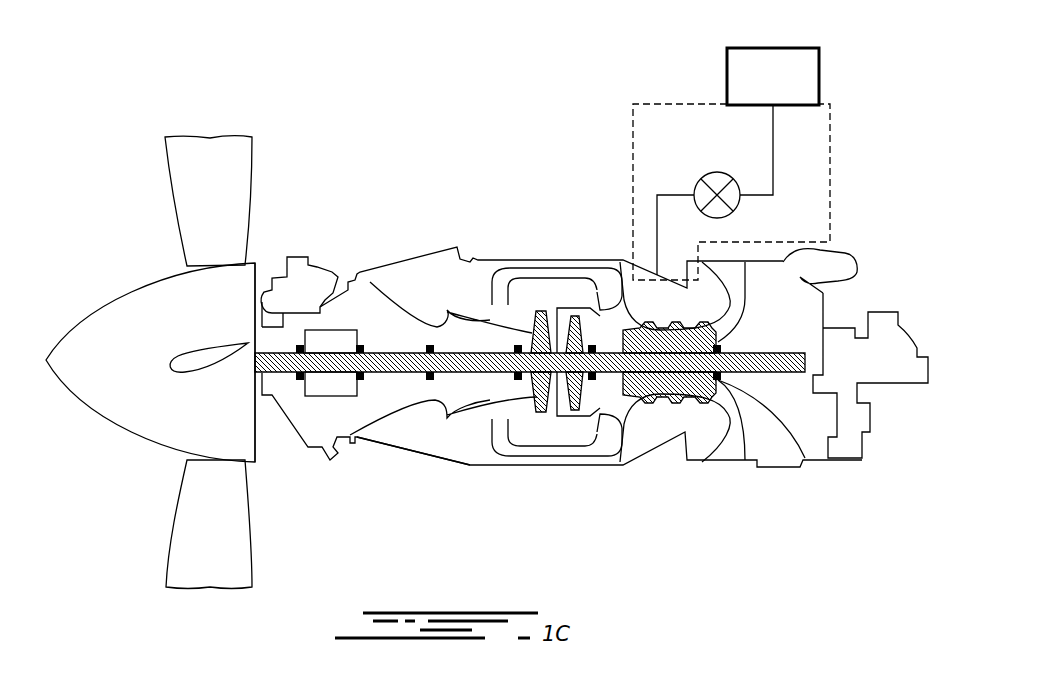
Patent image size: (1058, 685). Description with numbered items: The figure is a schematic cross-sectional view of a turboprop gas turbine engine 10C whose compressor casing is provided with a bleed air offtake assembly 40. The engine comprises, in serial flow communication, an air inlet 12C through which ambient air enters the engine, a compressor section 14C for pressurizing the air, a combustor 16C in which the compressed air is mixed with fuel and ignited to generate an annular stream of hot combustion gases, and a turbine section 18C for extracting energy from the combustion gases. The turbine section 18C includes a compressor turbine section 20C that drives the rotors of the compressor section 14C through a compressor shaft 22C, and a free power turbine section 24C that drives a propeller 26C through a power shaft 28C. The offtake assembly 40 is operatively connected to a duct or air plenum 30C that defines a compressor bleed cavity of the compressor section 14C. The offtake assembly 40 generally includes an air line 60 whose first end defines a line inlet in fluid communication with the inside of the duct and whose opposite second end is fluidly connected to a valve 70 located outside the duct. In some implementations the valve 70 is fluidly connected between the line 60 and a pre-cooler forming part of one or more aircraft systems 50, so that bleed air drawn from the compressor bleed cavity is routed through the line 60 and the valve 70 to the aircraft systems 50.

The gas turbine engine 10C is at (123, 138).
The air inlet 12C is at (730, 283).
The compressor section 14C is at (672, 400).
The combustor 16C is at (543, 280).
The turbine section 18C is at (526, 310).
The compressor turbine section 20C is at (553, 400).
The compressor shaft 22C is at (600, 395).
The free power turbine section 24C is at (537, 400).
The propeller 26C is at (205, 465).
The power shaft 28C is at (380, 373).
The duct or air plenum 30C is at (800, 462).
The offtake assembly 40 is at (832, 132).
The aircraft systems 50 is at (782, 70).
The air line 60 is at (655, 230).
The valve 70 is at (710, 175).